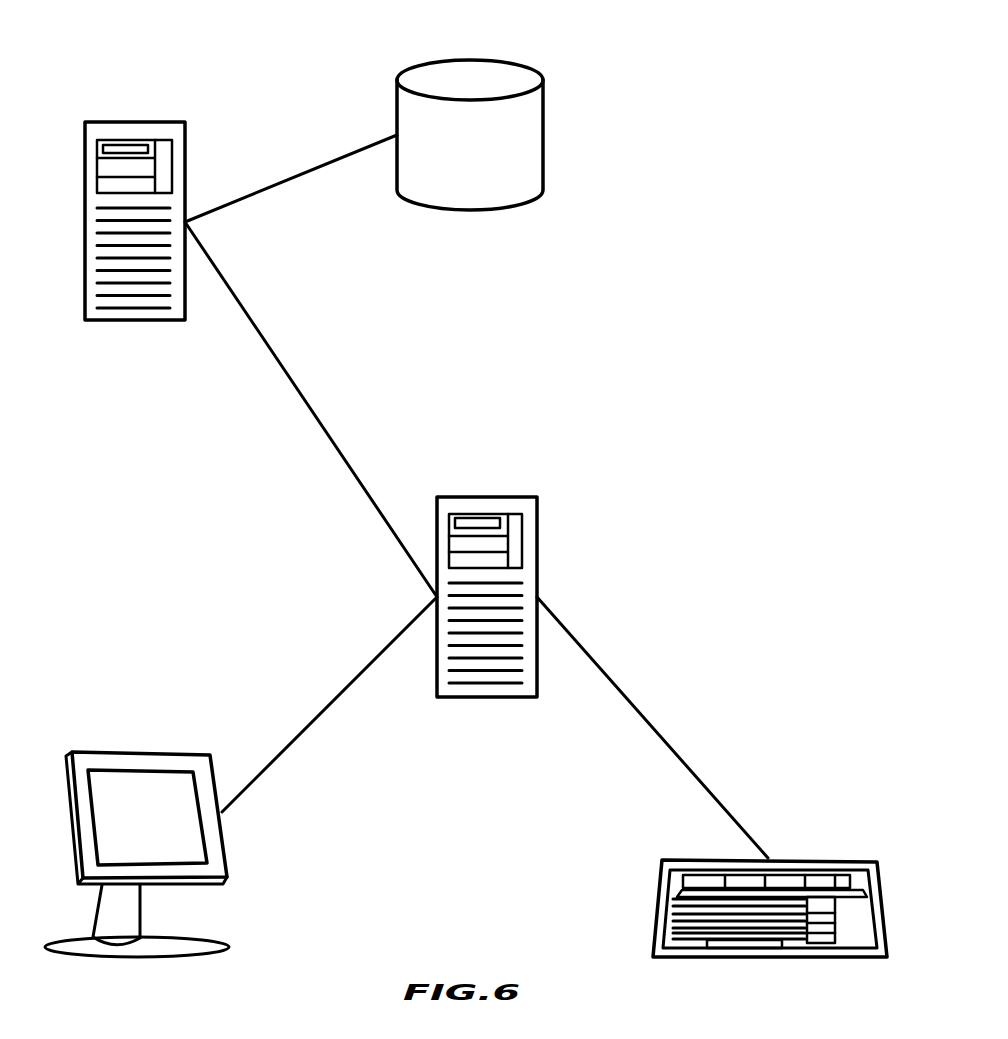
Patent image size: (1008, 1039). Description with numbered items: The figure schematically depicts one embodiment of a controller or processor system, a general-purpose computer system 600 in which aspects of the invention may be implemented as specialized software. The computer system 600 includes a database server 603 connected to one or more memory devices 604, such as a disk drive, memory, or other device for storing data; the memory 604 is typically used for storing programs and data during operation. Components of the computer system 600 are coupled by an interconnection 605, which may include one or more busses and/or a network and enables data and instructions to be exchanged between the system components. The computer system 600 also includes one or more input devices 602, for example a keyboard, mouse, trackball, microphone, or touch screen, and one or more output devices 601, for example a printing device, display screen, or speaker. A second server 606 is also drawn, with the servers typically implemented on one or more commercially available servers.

The computer system 600 is at (659, 53).
The output device 601 is at (138, 750).
The input device 602 is at (658, 892).
The database server 603 is at (185, 142).
The memory device 604 is at (507, 60).
The interconnection 605 is at (310, 398).
The server 606 is at (537, 515).